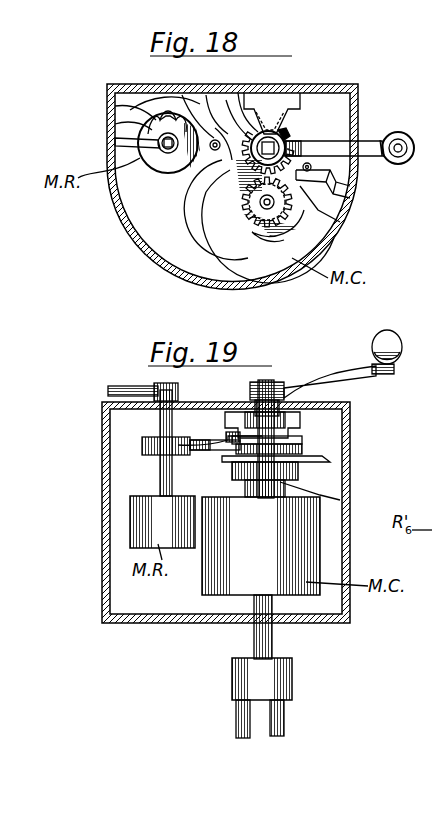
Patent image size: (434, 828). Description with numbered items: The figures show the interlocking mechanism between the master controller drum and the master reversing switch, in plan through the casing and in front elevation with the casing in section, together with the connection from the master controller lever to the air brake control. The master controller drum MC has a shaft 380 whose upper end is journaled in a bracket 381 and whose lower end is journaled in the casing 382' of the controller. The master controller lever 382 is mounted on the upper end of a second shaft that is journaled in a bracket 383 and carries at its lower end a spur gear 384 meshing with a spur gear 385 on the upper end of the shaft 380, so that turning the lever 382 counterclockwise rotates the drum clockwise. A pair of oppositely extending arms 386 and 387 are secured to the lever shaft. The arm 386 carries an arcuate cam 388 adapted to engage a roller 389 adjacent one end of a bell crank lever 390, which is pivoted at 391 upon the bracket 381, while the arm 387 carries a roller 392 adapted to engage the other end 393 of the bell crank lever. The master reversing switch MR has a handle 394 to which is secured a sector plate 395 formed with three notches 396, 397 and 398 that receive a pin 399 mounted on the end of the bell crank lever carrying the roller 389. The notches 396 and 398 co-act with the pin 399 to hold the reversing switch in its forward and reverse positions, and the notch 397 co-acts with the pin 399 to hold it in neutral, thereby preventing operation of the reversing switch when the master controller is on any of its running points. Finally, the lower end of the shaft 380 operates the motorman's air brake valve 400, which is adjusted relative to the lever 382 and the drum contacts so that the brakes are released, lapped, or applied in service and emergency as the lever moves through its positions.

In FIG. 18, the shaft 380 is at (247, 229).
In FIG. 19, the shaft 380 is at (244, 490).
In FIG. 18, the bracket 381 is at (335, 238).
In FIG. 19, the bracket 381 is at (302, 478).
In FIG. 18, the master controller lever 382 is at (349, 136).
In FIG. 19, the master controller lever 382 is at (343, 364).
In FIG. 18, the casing 382' is at (232, 197).
In FIG. 19, the casing 382' is at (226, 528).
In FIG. 18, the bracket 383 is at (272, 108).
In FIG. 19, the bracket 383 is at (290, 416).
In FIG. 18, the spur gear 384 is at (364, 110).
In FIG. 18, the spur gear 385 is at (258, 240).
In FIG. 19, the spur gear 385 is at (232, 472).
In FIG. 18, the arm 386 is at (250, 84).
In FIG. 18, the arm 387 is at (332, 168).
In FIG. 19, the arm 387 is at (304, 440).
In FIG. 18, the arcuate cam 388 is at (198, 110).
In FIG. 18, the roller 389 is at (212, 152).
In FIG. 19, the roller 389 is at (202, 442).
In FIG. 18, the bell crank lever 390 is at (213, 227).
In FIG. 19, the bell crank lever 390 is at (158, 468).
In FIG. 18, the pivot 391 is at (267, 224).
In FIG. 18, the roller 392 is at (310, 176).
In FIG. 19, the roller 392 is at (304, 449).
In FIG. 19, the end of bell crank lever 393 is at (330, 460).
In FIG. 18, the handle 394 is at (116, 142).
In FIG. 19, the handle 394 is at (110, 388).
In FIG. 18, the sector plate 395 is at (162, 172).
In FIG. 19, the sector plate 395 is at (145, 450).
In FIG. 18, the notch 396 is at (116, 120).
In FIG. 18, the notch 397 is at (116, 102).
In FIG. 18, the notch 398 is at (150, 112).
In FIG. 18, the pin 399 is at (124, 92).
In FIG. 19, the motorman's air brake valve 400 is at (300, 684).